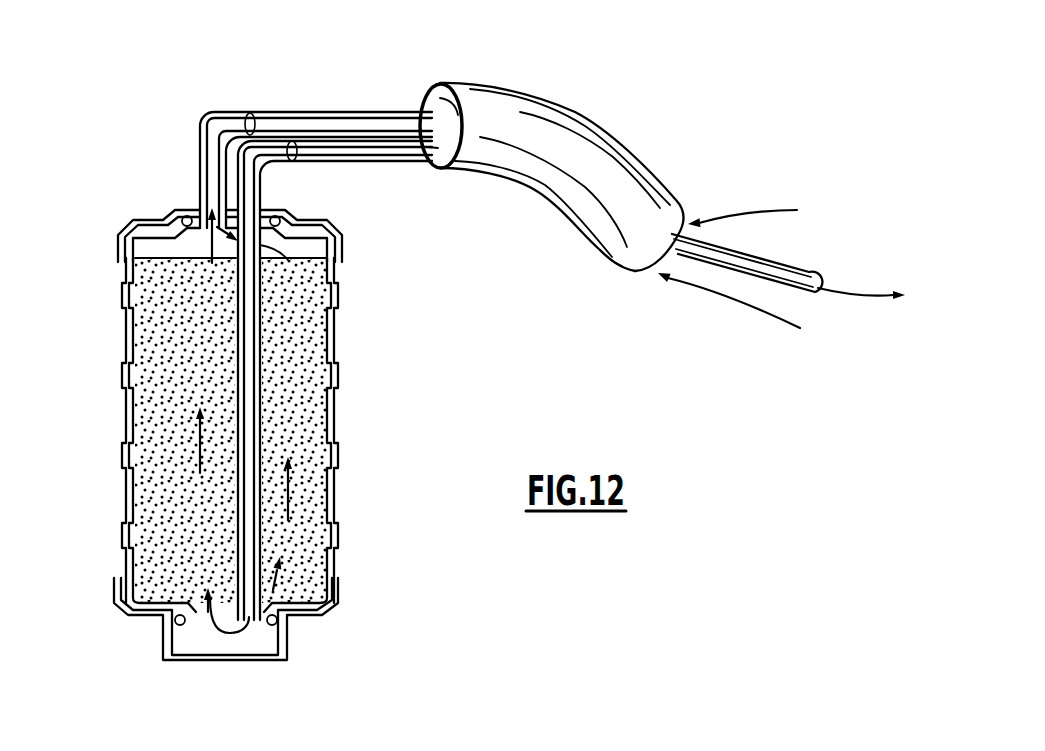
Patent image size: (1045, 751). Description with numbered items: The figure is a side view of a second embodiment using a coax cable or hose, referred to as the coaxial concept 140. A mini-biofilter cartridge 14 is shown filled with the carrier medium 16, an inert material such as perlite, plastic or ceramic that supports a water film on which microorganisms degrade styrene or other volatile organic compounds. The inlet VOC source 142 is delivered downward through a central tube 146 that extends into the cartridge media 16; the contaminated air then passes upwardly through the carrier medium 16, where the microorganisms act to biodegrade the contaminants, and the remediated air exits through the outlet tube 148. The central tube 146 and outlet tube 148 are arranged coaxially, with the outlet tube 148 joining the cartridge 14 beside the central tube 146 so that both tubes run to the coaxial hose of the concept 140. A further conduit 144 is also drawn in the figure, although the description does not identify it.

The mini-biofilter cartridge 14 is at (126, 342).
The carrier medium 16 is at (313, 333).
The coaxial concept 140 is at (600, 92).
The inlet VOC source 142 is at (621, 267).
The outlet tube 144 is at (788, 270).
The central tube 146 is at (258, 385).
The outlet tube 148 is at (200, 160).